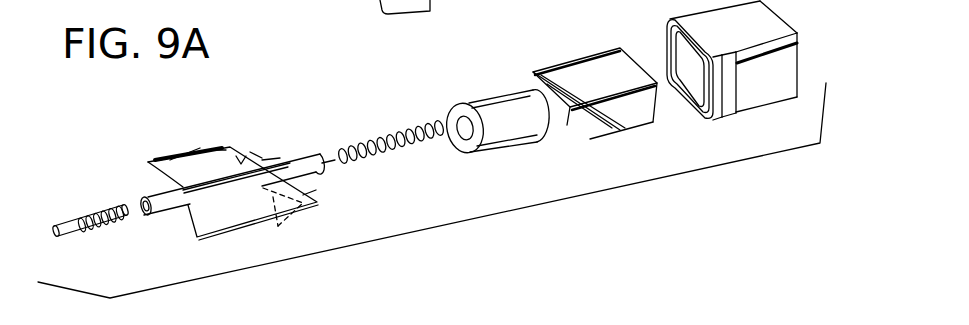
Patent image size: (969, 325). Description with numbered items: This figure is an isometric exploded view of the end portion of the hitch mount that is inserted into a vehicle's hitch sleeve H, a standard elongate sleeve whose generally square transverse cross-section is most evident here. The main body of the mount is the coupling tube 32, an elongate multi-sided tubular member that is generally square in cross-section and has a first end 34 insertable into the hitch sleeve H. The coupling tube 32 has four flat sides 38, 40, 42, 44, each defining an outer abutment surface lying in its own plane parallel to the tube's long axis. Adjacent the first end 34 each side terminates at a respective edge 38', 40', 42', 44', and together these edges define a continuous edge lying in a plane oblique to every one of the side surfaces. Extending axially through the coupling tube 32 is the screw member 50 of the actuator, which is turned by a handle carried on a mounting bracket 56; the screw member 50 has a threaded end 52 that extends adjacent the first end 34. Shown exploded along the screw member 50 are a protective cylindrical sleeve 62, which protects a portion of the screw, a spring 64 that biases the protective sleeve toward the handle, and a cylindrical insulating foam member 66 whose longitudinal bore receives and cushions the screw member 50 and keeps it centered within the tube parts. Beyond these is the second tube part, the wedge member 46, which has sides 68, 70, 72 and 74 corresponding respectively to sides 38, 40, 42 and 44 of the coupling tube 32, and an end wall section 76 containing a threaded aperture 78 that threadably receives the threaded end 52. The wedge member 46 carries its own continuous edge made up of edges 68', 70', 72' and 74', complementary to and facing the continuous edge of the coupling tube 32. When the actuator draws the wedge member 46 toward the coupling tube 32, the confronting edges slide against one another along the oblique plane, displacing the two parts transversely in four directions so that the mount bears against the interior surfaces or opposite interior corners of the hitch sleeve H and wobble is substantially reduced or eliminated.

The coupling tube 32 is at (164, 152).
The first end 34 is at (252, 158).
The flat side 38 is at (211, 112).
The edge 38' is at (290, 134).
The flat side 40 is at (233, 204).
The edge 40' is at (347, 195).
The flat side 42 is at (324, 19).
The edge 42' is at (297, 215).
The flat side 44 is at (180, 123).
The edge 44' is at (244, 125).
The wedge member 46 is at (600, 47).
The screw member 50 is at (68, 218).
The threaded end 52 is at (100, 212).
The mounting bracket 56 is at (358, 0).
The protective cylindrical sleeve 62 is at (170, 215).
The spring 64 is at (393, 133).
The cylindrical insulating foam member 66 is at (477, 100).
The wedge side 68 is at (616, 33).
The wedge edge 68' is at (544, 42).
The wedge side 70 is at (646, 148).
The wedge edge 70' is at (609, 150).
The wedge side 72 is at (579, 160).
The wedge edge 72' is at (572, 150).
The wedge side 74 is at (513, 100).
The wedge edge 74' is at (499, 170).
The end wall section 76 is at (643, 63).
The aperture 78 is at (663, 107).
The hitch sleeve H is at (767, 80).